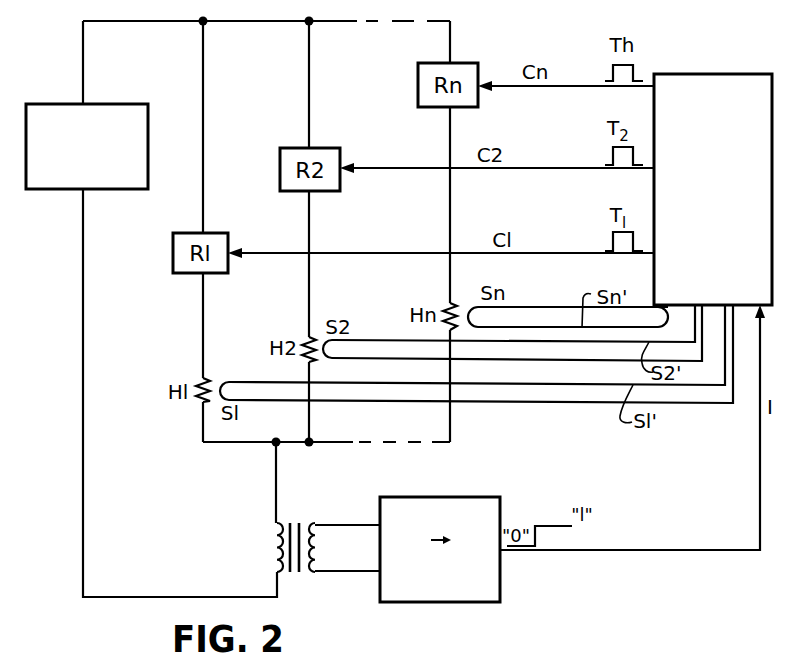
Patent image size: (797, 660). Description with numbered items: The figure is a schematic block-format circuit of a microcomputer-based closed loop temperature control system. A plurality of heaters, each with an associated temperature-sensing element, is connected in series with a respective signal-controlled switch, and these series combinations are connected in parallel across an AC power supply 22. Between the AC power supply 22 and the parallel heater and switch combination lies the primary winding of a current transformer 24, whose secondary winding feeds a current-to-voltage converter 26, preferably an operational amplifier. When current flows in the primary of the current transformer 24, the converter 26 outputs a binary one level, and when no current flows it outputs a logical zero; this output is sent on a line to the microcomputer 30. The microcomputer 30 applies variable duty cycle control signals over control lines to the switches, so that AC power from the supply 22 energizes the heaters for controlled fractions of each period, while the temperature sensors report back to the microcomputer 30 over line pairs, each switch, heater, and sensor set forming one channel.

The AC power supply 22 is at (118, 103).
The current transformer 24 is at (302, 587).
The current-to-voltage converter 26 is at (458, 497).
The microcomputer 30 is at (728, 88).